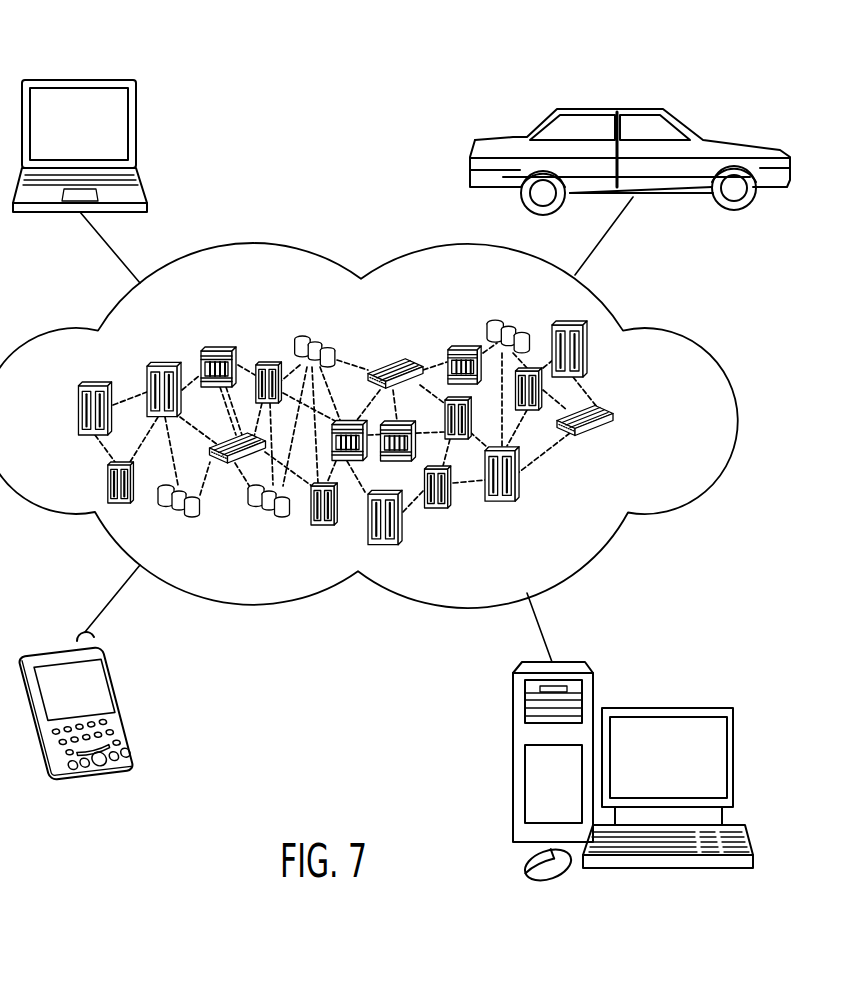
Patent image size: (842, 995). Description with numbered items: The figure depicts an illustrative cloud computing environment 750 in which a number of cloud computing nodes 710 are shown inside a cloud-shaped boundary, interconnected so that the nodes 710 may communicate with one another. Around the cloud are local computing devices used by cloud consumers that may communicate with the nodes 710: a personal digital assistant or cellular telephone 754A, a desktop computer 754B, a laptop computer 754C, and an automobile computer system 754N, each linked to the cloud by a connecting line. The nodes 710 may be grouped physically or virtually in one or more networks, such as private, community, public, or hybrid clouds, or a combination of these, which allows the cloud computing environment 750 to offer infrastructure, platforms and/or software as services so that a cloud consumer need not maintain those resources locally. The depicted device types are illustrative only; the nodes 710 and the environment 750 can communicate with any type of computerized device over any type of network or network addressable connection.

The cloud computing environment 750 is at (682, 330).
The cloud computing nodes 710 is at (626, 423).
The personal digital assistant (PDA) or cellular telephone 754A is at (62, 648).
The desktop computer 754B is at (668, 706).
The laptop computer 754C is at (78, 80).
The automobile computer system 754N is at (608, 107).